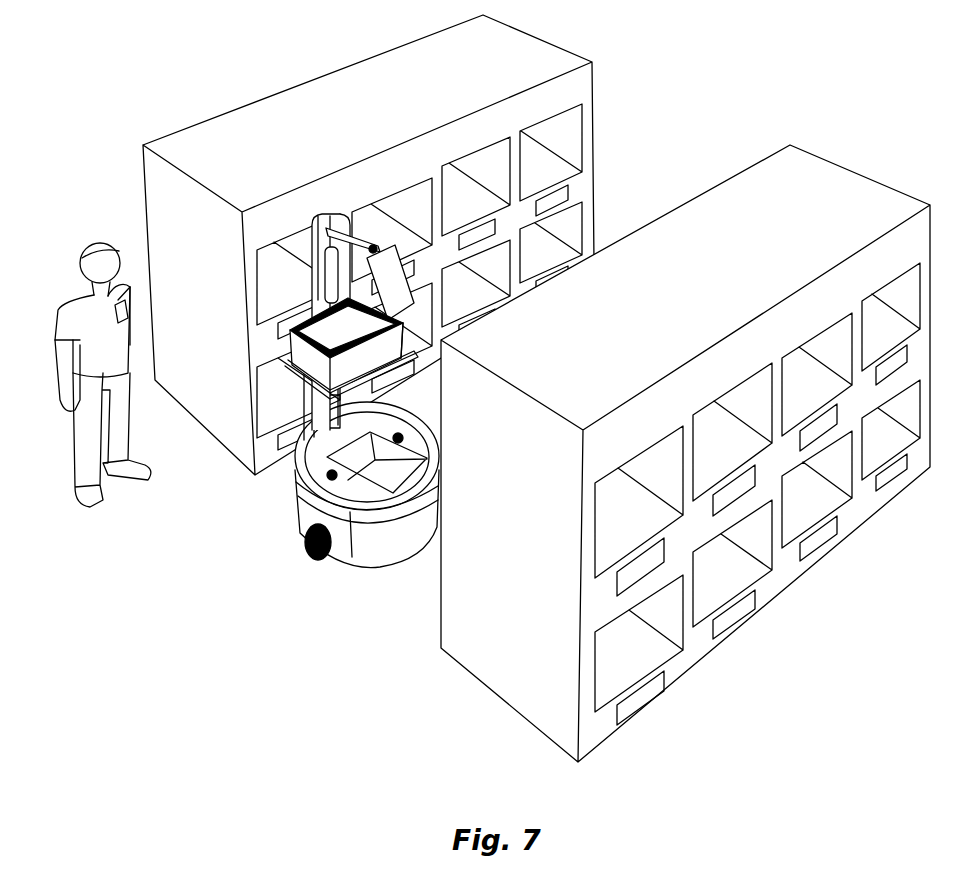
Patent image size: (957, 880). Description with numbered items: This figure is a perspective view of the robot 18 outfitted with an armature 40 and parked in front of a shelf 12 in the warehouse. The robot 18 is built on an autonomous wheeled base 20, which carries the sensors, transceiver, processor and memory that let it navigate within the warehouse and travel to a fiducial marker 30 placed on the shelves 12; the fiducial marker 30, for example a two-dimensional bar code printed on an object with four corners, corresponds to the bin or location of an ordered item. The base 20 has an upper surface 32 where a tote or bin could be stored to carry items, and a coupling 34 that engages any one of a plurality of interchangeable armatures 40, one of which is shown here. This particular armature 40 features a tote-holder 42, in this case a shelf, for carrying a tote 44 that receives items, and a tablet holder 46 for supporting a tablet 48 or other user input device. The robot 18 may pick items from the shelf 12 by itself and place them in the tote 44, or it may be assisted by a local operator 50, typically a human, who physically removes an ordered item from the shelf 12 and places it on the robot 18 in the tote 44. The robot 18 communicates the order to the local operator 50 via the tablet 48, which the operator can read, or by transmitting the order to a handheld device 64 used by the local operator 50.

The shelf 12 is at (216, 114).
The robot 18 is at (336, 496).
The autonomous wheeled base 20 is at (332, 568).
The fiducial marker 30 is at (288, 462).
The upper surface 32 is at (390, 485).
The coupling 34 is at (328, 402).
The armature 40 is at (332, 226).
The tote-holder 42 is at (340, 348).
The tote 44 is at (343, 336).
The tablet holder 46 is at (405, 322).
The tablet 48 is at (392, 263).
The local operator 50 is at (116, 375).
The handheld device 64 is at (128, 345).